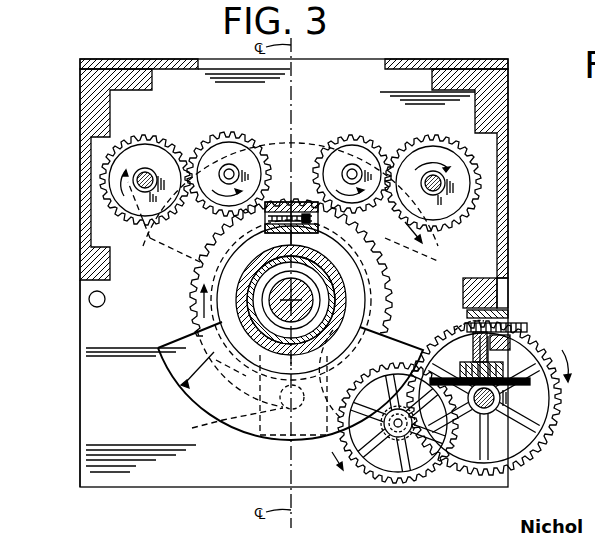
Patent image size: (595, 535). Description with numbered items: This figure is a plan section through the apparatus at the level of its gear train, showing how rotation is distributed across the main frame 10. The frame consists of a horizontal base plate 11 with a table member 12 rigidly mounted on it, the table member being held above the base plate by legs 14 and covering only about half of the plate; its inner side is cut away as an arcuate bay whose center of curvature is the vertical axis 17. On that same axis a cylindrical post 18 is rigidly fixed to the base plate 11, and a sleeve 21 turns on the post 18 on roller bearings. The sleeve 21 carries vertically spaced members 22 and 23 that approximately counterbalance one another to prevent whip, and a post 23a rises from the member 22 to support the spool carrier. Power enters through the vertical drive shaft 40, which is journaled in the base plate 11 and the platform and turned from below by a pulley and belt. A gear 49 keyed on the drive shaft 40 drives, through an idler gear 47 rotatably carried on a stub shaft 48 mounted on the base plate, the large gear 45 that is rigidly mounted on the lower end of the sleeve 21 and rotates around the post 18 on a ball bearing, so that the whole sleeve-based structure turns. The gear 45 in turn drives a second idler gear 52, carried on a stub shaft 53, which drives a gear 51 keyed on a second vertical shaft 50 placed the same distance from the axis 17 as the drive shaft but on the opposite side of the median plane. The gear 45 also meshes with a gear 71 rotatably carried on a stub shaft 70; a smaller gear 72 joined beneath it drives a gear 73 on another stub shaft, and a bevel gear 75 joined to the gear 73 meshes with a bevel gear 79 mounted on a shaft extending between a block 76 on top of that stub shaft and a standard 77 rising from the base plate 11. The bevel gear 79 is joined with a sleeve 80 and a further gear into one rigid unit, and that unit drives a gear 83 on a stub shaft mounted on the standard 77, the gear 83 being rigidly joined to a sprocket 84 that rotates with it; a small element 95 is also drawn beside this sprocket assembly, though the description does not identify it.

The main frame 10 is at (80, 347).
The base plate 11 is at (93, 400).
The table member 12 is at (143, 58).
The legs 14 is at (80, 107).
The vertical axis 17 is at (264, 357).
The cylindrical post 18 is at (260, 272).
The sleeve 21 is at (344, 311).
The upper member 22 is at (172, 262).
The lower member 23 is at (180, 380).
The post 23a is at (252, 383).
The drive shaft 40 is at (445, 183).
The gear 45 is at (193, 316).
The idler gear 47 is at (352, 138).
The idler gear shaft 48 is at (356, 172).
The gear 49 is at (475, 170).
The shaft 50 is at (153, 172).
The gear 51 is at (103, 173).
The idler gear 52 is at (246, 141).
The stub shaft 53 is at (240, 174).
The stub shaft 70 is at (393, 437).
The gear 71 is at (335, 446).
The smaller gear 72 is at (398, 441).
The gear 73 is at (530, 450).
The bevel gear 75 is at (464, 445).
The block 76 is at (540, 420).
The standard 77 is at (508, 292).
The bevel gear 79 is at (504, 400).
The sleeve 80 is at (457, 327).
The gear 83 is at (517, 323).
The sprocket 84 is at (532, 381).
The stop block 95 is at (510, 342).